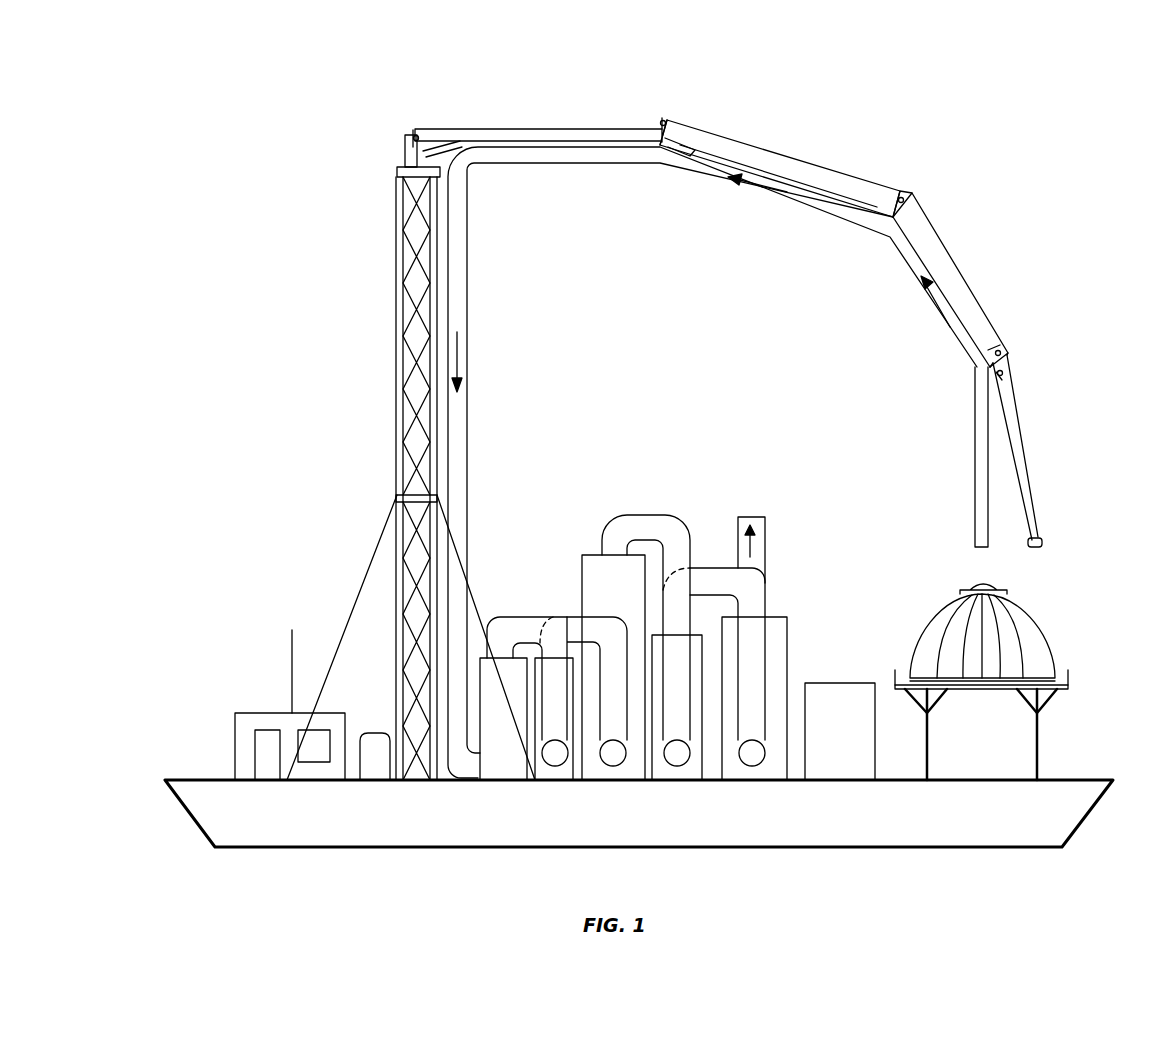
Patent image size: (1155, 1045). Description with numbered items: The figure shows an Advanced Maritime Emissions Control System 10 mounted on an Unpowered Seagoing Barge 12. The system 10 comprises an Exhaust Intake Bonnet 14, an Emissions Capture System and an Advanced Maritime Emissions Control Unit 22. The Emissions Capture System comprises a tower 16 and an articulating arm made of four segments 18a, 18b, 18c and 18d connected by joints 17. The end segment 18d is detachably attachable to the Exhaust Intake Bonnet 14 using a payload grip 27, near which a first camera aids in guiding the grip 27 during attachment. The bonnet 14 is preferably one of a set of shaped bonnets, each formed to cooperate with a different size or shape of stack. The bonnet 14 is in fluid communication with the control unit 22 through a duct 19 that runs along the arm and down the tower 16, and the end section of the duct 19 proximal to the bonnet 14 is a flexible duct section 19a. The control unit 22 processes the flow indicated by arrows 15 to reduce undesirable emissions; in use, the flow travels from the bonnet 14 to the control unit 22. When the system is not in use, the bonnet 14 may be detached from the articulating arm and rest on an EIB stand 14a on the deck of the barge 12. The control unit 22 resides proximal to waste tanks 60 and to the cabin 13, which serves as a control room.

The Advanced Maritime Emissions Control System 10 is at (1030, 162).
The Unpowered Seagoing Barge 12 is at (220, 810).
The cabin 13 is at (243, 725).
The Exhaust Intake Bonnet 14 is at (1035, 643).
The EIB stand 14a is at (1037, 745).
The arrows 15 is at (465, 352).
The tower 16 is at (397, 395).
The joints 17 is at (417, 133).
The articulating arm segment 18a is at (515, 140).
The articulating arm segment 18b is at (760, 152).
The articulating arm segment 18c is at (965, 282).
The end segment 18d is at (1020, 432).
The duct 19 is at (630, 155).
The flexible duct section 19a is at (975, 438).
The Advanced Maritime Emissions Control Unit 22 is at (560, 538).
The payload grip 27 is at (1043, 540).
The waste tanks 60 is at (832, 697).